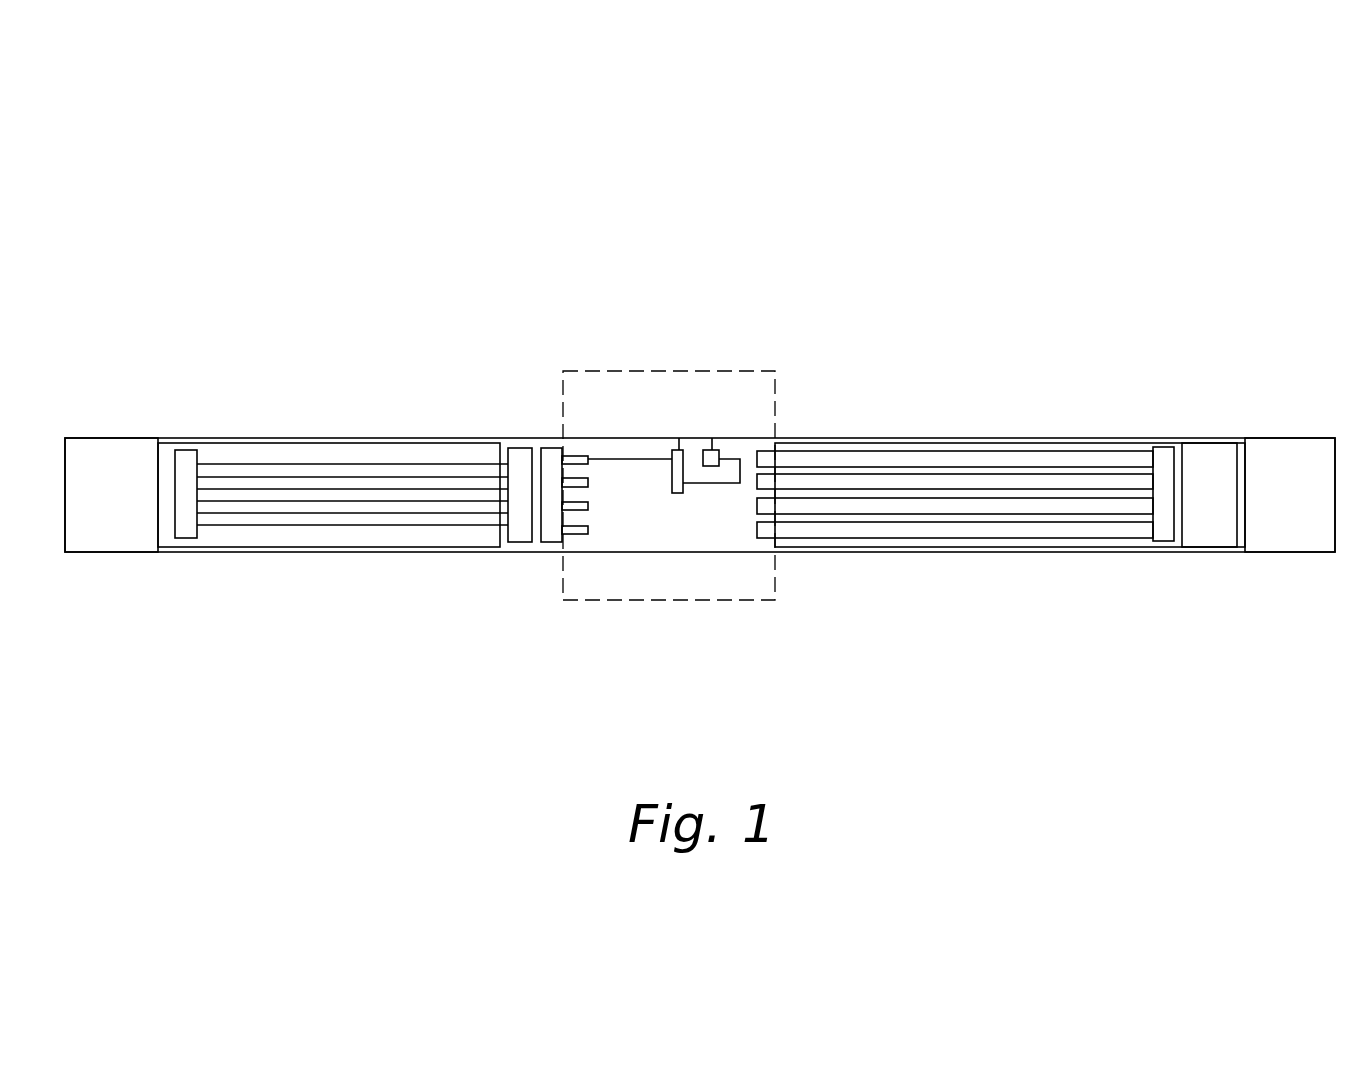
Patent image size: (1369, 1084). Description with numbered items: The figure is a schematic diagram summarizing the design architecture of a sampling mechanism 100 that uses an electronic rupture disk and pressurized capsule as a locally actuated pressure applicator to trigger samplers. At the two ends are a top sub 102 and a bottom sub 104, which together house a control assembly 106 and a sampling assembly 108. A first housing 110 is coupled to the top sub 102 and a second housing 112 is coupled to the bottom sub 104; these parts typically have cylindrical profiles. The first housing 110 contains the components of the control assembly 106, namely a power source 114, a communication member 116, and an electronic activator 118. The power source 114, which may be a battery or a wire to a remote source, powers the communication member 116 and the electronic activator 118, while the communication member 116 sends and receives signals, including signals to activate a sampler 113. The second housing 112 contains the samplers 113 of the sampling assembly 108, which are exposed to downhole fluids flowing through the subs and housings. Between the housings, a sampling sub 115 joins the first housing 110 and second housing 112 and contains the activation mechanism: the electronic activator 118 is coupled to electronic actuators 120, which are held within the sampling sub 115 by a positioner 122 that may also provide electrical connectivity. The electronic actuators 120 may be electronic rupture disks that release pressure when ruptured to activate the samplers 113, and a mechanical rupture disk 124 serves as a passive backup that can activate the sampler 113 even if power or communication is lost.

The sampling mechanism 100 is at (1193, 174).
The top sub 102 is at (118, 437).
The bottom sub 104 is at (1292, 437).
The control assembly 106 is at (333, 521).
The sampling assembly 108 is at (1001, 518).
The first housing 110 is at (265, 437).
The second housing 112 is at (1070, 437).
The samplers 113 is at (892, 462).
The power source 114 is at (339, 493).
The sampling sub 115 is at (666, 601).
The communication member 116 is at (402, 472).
The electronic activator 118 is at (462, 518).
The electronic actuators 120 is at (578, 460).
The positioner 122 is at (552, 462).
The mechanical rupture disk 124 is at (713, 455).